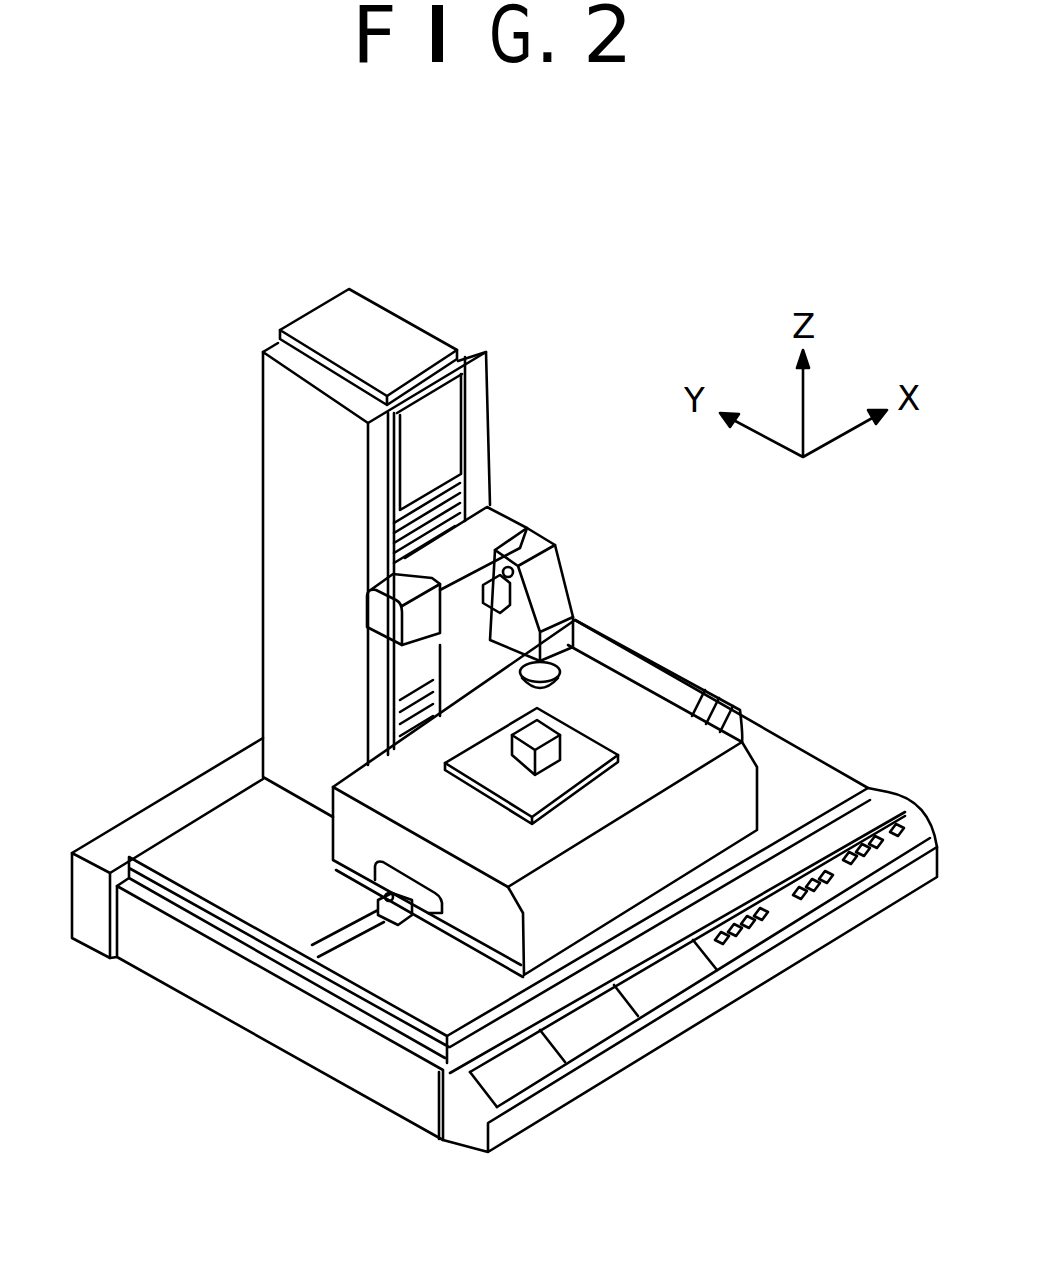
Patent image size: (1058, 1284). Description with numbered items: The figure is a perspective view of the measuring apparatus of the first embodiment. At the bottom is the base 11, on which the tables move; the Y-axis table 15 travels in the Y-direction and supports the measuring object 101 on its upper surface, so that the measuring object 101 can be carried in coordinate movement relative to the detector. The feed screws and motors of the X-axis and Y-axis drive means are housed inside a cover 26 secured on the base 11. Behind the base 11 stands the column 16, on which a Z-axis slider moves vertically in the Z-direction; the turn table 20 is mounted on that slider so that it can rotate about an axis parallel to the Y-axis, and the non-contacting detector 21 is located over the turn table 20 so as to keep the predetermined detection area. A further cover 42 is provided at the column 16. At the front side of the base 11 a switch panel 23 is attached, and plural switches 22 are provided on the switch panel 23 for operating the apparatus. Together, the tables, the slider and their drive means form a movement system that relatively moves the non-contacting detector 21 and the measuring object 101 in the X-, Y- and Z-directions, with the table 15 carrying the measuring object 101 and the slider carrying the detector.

The base 11 is at (195, 988).
The Y-axis table 15 is at (508, 783).
The column 16 is at (283, 499).
The turn table 20 is at (472, 677).
The non-contacting detector 21 is at (558, 590).
The switches 22 is at (820, 887).
The switch panel 23 is at (850, 880).
The cover 26 is at (742, 767).
The cover 42 is at (327, 308).
The measuring object 101 is at (551, 727).